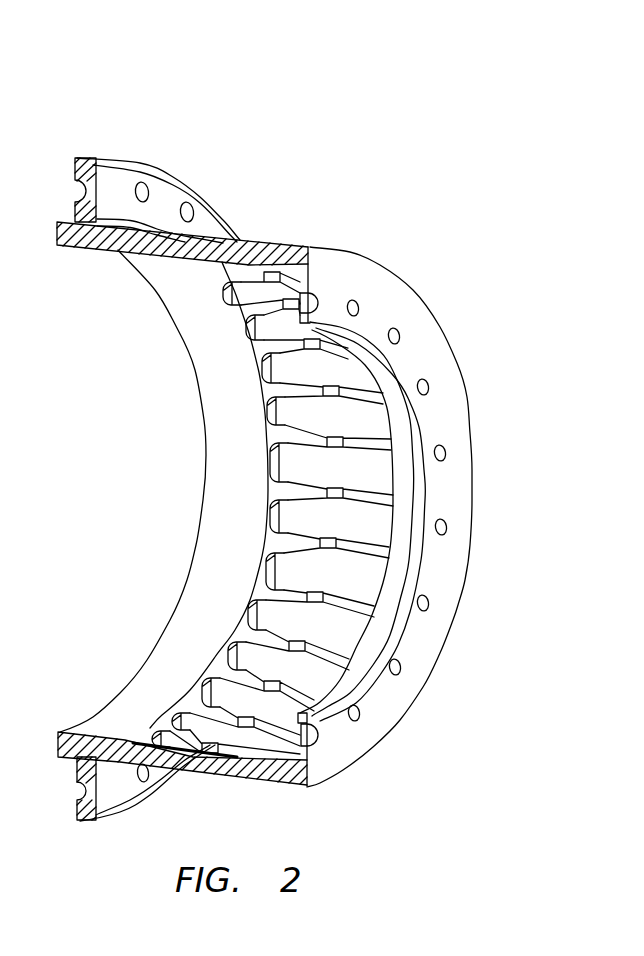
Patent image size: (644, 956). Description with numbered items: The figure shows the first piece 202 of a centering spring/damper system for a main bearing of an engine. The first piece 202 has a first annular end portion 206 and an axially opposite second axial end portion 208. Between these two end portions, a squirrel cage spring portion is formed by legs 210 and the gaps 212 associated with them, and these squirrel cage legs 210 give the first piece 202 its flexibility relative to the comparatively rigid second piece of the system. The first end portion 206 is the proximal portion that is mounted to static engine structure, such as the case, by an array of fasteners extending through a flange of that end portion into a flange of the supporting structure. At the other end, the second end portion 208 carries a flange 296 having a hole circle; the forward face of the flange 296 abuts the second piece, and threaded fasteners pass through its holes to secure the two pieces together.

The first piece 202 is at (365, 492).
The first annular end portion 206 is at (135, 152).
The second axial end portion 208 is at (455, 512).
The legs 210 is at (381, 500).
The gaps 212 is at (342, 472).
The flange 296 is at (307, 752).